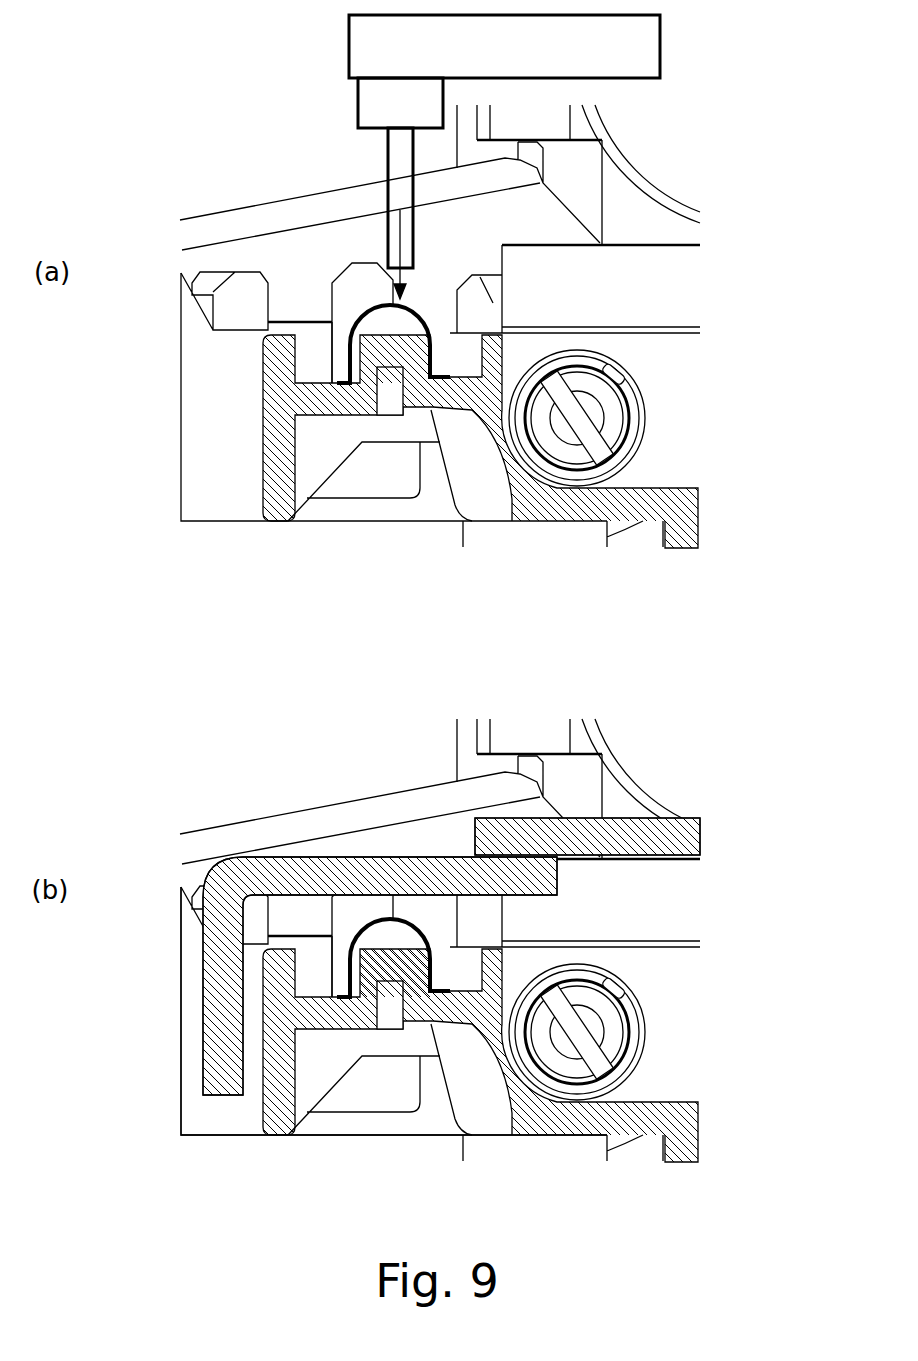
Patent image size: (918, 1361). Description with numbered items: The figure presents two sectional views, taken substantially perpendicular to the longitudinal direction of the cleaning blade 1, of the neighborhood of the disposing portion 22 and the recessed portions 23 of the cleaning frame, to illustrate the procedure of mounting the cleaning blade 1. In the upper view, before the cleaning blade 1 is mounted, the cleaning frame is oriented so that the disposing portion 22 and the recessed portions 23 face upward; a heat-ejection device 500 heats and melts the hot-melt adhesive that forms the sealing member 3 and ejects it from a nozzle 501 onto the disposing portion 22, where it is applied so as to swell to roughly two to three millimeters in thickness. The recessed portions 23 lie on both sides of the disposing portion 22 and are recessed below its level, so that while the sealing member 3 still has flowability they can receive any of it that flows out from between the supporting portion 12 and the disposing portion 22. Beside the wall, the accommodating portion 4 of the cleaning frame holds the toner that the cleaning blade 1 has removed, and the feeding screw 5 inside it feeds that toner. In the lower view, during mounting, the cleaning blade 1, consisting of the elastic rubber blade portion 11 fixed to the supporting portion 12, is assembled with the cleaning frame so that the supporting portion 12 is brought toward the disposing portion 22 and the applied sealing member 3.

The cleaning blade 1 is at (231, 857).
The sealing member 3 is at (418, 302).
The accommodating portion 4 is at (673, 442).
The feeding screw 5 is at (637, 384).
The blade portion 11 is at (700, 838).
The supporting portion 12 is at (333, 855).
The disposing portion 22 is at (397, 333).
The recessed portions 23 is at (313, 348).
The heat-ejection device 500 is at (349, 46).
The nozzle 501 is at (387, 154).